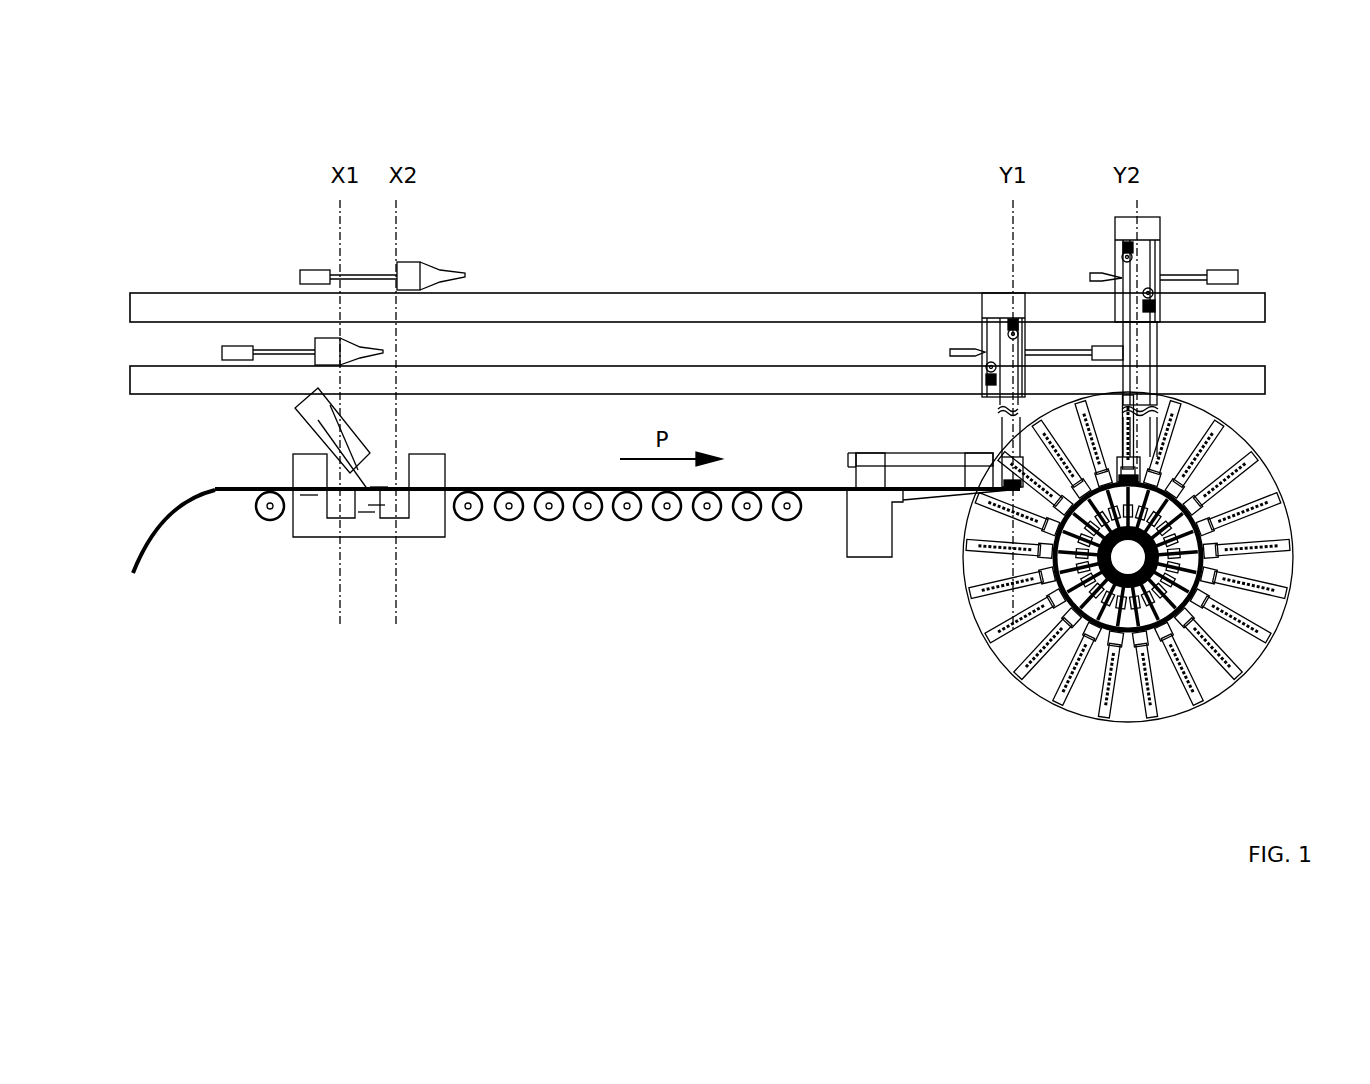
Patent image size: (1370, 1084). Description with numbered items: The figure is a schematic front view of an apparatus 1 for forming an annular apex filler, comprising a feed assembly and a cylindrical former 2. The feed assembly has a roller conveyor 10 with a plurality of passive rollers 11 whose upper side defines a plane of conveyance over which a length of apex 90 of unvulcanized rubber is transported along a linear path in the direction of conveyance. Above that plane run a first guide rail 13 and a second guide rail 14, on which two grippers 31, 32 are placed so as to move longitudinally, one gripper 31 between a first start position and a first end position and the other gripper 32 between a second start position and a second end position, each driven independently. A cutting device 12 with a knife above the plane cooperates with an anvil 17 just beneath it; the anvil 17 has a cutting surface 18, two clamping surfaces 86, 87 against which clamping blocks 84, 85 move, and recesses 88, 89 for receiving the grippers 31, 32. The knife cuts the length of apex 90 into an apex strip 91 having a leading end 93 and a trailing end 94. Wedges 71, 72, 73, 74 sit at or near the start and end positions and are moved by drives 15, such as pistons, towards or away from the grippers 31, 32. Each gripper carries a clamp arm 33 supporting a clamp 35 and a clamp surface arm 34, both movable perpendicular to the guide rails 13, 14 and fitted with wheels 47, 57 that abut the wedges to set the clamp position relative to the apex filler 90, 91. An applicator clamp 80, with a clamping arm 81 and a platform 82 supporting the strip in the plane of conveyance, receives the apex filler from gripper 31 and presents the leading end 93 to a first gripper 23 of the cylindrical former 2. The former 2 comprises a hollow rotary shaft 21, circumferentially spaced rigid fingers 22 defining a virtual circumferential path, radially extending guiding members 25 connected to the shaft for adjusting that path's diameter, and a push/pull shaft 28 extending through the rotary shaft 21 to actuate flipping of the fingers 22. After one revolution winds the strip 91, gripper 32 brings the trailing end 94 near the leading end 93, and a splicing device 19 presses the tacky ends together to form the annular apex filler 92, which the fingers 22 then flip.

The apparatus 1 is at (852, 226).
The cylindrical former 2 is at (1078, 748).
The roller conveyor 10 is at (600, 576).
The passive rollers 11 is at (675, 521).
The cutting device 12 is at (317, 424).
The first guide rail 13 is at (645, 372).
The second guide rail 14 is at (640, 302).
The drives 15 is at (238, 352).
The anvil 17 is at (365, 513).
The cutting surface 18 is at (375, 508).
The splicing device 19 is at (1130, 583).
The hollow rotary shaft 21 is at (1184, 624).
The fingers 22 is at (1292, 524).
The first gripper 23 is at (1037, 567).
The guiding member 25 is at (1032, 665).
The push/pull shaft 28 is at (1157, 720).
The gripper 31 is at (994, 304).
The gripper 32 is at (1146, 230).
The clamp arm 33 is at (1020, 391).
The clamp surface arm 34 is at (1153, 389).
The clamp 35 is at (1003, 470).
The wheels 47 is at (993, 367).
The wheels 57 is at (1018, 335).
The wedge 71 is at (350, 350).
The wedge 72 is at (973, 352).
The wedge 73 is at (422, 276).
The wedge 74 is at (1096, 276).
The applicator clamp 80 is at (962, 464).
The clamping arm 81 is at (913, 461).
The platform 82 is at (903, 494).
The clamping block 84 is at (307, 474).
The clamping block 85 is at (432, 467).
The clamping surface 86 is at (313, 498).
The clamping surface 87 is at (434, 531).
The recess 88 is at (337, 511).
The recess 89 is at (413, 513).
The length of apex 90 is at (204, 496).
The apex strip 91 is at (540, 485).
The annular apex filler 92 is at (1278, 627).
The leading end 93 is at (317, 422).
The trailing end 94 is at (378, 489).